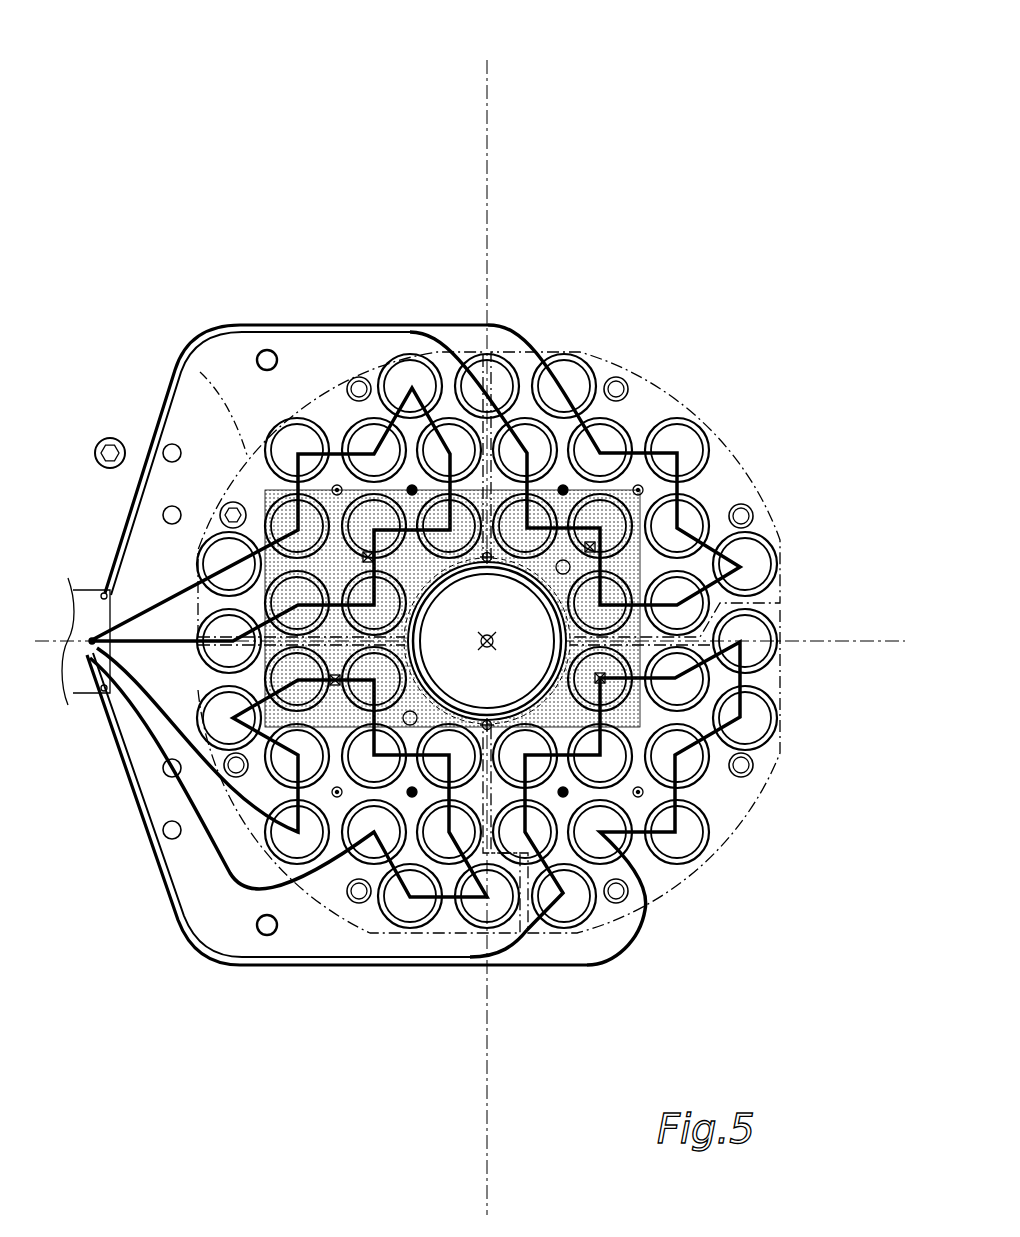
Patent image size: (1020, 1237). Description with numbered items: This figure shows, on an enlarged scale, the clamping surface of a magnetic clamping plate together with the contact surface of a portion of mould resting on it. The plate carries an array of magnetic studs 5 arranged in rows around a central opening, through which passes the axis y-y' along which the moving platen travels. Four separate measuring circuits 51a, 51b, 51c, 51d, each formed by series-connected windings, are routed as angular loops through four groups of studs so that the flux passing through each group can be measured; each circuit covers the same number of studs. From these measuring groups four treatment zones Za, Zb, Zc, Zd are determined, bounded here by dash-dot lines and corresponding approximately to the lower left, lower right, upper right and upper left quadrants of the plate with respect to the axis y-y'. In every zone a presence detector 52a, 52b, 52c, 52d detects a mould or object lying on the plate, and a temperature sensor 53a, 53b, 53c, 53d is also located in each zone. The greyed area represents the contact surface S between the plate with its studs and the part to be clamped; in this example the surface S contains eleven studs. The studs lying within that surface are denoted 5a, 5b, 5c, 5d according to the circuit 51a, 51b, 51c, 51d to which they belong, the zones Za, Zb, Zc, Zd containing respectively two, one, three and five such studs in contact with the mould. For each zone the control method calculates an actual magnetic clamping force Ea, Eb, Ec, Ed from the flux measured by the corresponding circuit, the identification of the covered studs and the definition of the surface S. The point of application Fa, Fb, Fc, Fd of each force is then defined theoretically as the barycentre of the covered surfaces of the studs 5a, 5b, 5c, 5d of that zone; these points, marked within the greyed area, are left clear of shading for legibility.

The magnetic studs 5 is at (570, 377).
The studs of zone a 5a is at (233, 712).
The studs of zone b 5b is at (712, 617).
The studs of zone c 5c is at (705, 587).
The studs of zone d 5d is at (232, 508).
The measuring circuit 51a is at (165, 850).
The measuring circuit 51b is at (537, 966).
The measuring circuit 51c is at (212, 345).
The measuring circuit 51d is at (256, 562).
The presence detector 52a is at (337, 792).
The presence detector 52b is at (638, 792).
The presence detector 52c is at (638, 490).
The presence detector 52d is at (337, 490).
The temperature sensor 53a is at (412, 792).
The temperature sensor 53b is at (563, 792).
The temperature sensor 53c is at (563, 490).
The temperature sensor 53d is at (412, 490).
The contact surface S is at (197, 368).
The treatment zone Za is at (262, 853).
The treatment zone Zb is at (737, 817).
The treatment zone Zc is at (738, 470).
The treatment zone Zd is at (352, 386).
The actual magnetic clamping force Ea is at (339, 668).
The actual magnetic clamping force Eb is at (601, 667).
The actual magnetic clamping force Ec is at (574, 546).
The actual magnetic clamping force Ed is at (363, 543).
The point of application Fa is at (337, 690).
The point of application Fb is at (592, 688).
The point of application Fc is at (592, 542).
The point of application Fd is at (362, 562).
The axis y-y' is at (506, 652).